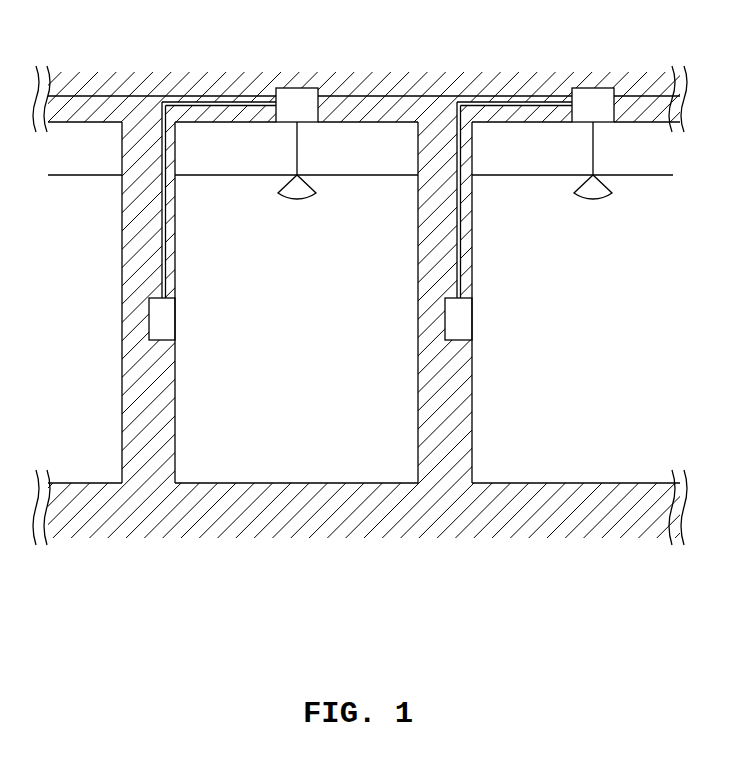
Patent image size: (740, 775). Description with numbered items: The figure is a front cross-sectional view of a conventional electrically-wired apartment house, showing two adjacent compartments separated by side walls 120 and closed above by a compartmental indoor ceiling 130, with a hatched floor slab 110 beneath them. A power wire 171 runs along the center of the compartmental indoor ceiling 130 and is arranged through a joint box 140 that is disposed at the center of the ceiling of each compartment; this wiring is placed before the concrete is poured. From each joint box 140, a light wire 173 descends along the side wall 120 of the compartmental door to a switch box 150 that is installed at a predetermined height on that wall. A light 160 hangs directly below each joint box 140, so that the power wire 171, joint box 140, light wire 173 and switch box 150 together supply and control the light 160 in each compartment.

The bottom wall 110 is at (302, 507).
The side wall 120 is at (165, 390).
The compartmental indoor ceiling 130 is at (413, 88).
The joint box 140 is at (303, 88).
The switch box 150 is at (177, 307).
The light 160 is at (302, 201).
The power wire 171 is at (148, 90).
The light wire 173 is at (168, 250).